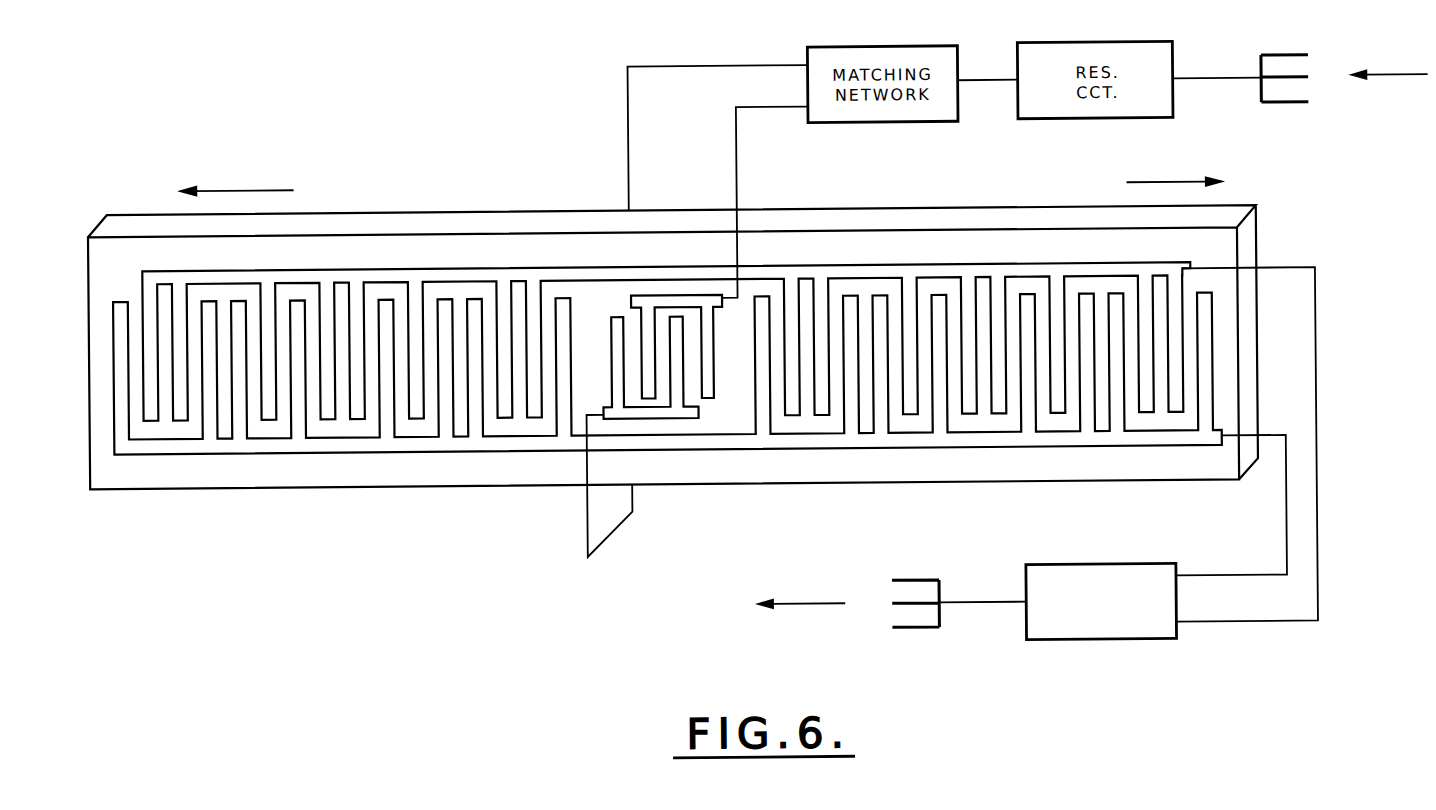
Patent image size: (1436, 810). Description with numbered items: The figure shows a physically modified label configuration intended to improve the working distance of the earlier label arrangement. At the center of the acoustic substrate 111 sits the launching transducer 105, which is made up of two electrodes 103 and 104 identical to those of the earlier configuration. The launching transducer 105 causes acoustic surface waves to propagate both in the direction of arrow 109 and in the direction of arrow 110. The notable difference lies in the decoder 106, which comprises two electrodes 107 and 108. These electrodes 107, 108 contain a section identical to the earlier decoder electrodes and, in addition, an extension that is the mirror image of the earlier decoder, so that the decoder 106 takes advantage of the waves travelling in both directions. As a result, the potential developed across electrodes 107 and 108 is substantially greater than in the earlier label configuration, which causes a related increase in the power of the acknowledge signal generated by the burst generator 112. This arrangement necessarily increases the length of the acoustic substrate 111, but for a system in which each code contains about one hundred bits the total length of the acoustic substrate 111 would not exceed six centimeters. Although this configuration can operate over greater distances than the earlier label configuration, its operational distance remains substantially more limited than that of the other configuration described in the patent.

The electrode 103 is at (677, 419).
The electrode 104 is at (665, 295).
The launching transducer 105 is at (713, 407).
The decoder 106 is at (418, 450).
The electrode 107 is at (202, 450).
The electrode 108 is at (387, 267).
The arrow 109 is at (234, 186).
The arrow 110 is at (1163, 186).
The acoustic substrate 111 is at (890, 483).
The burst generator 112 is at (1127, 568).